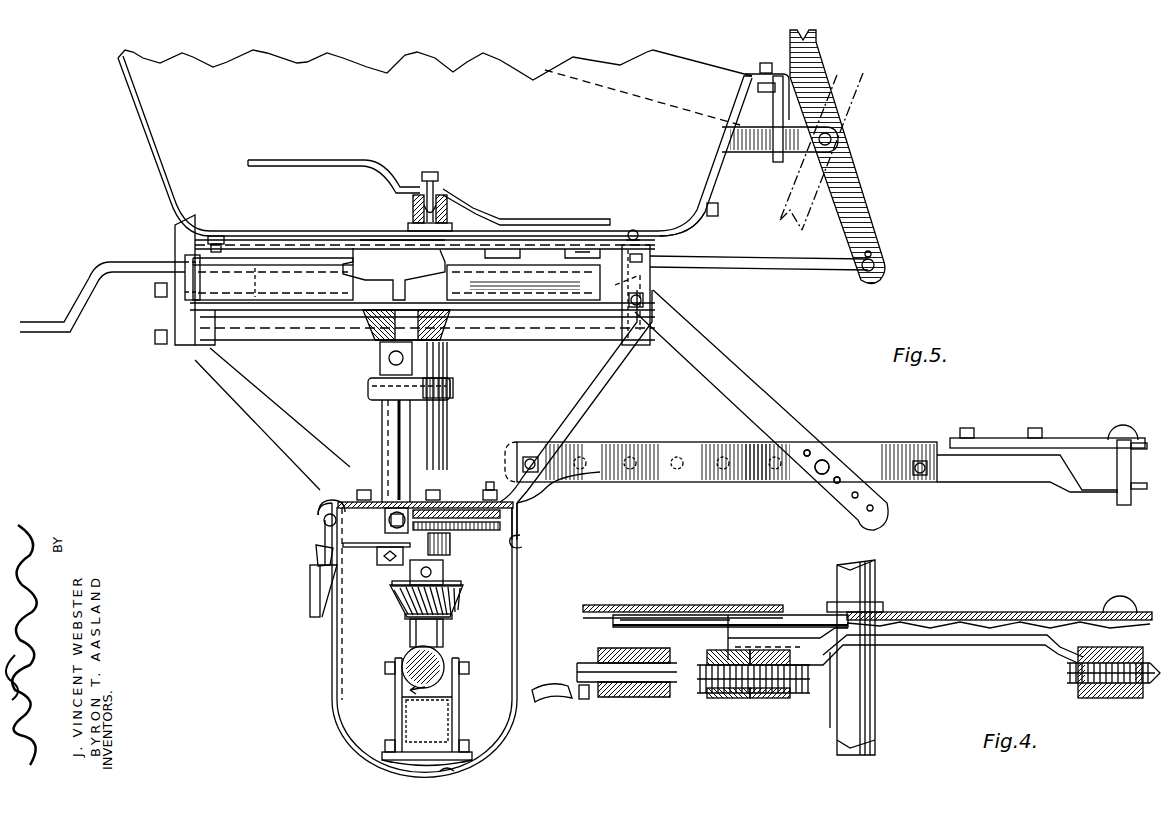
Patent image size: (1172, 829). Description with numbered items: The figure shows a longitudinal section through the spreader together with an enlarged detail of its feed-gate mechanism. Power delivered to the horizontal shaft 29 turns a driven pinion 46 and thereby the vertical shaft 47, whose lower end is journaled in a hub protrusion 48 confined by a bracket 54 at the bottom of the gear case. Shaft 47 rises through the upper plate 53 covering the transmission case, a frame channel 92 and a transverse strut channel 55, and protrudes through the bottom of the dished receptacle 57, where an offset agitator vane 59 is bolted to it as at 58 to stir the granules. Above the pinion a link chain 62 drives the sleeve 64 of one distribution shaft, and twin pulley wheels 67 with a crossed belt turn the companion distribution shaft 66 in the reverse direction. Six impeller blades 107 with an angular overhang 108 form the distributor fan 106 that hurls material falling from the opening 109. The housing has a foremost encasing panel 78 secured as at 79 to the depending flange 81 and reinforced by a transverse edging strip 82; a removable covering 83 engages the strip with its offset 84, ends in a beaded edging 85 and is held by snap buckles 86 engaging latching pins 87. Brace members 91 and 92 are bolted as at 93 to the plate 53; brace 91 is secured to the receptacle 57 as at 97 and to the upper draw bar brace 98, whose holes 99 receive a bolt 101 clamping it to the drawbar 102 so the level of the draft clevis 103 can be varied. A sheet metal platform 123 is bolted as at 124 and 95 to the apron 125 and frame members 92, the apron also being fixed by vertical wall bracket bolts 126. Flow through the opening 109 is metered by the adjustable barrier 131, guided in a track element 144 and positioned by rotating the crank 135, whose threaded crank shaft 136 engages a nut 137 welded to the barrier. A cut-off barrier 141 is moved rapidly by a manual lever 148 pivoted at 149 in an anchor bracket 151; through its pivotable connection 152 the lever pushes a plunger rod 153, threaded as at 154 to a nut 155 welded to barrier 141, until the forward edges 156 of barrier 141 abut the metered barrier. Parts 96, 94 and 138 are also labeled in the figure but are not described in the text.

In FIG. 5, the dished receptacle 57 is at (138, 108).
In FIG. 5, the offset agitator vane 59 is at (350, 160).
In FIG. 5, the bolt 58 is at (432, 177).
In FIG. 5, the vertical shaft 47 is at (440, 210).
In FIG. 4, the vertical shaft 47 is at (878, 584).
In FIG. 5, the front bracket plate 96 is at (190, 228).
In FIG. 5, the bolts 95 is at (163, 336).
In FIG. 5, the crank 135 is at (112, 258).
In FIG. 5, the track element 144 is at (290, 240).
In FIG. 4, the track element 144 is at (640, 620).
In FIG. 5, the angular overhang 108 is at (240, 264).
In FIG. 5, the impeller blades 107 is at (300, 290).
In FIG. 5, the adjustable barrier 131 is at (373, 232).
In FIG. 4, the adjustable barrier 131 is at (893, 612).
In FIG. 5, the sheet metal platform 123 is at (522, 330).
In FIG. 5, the distributor fan 106 is at (213, 312).
In FIG. 5, the forward edges 156 is at (495, 238).
In FIG. 5, the cut-off barrier 141 is at (577, 238).
In FIG. 4, the cut-off barrier 141 is at (1060, 652).
In FIG. 5, the bolts 124 is at (610, 245).
In FIG. 5, the securement 97 is at (652, 255).
In FIG. 5, the bracket nut 94 is at (647, 300).
In FIG. 5, the anchor bracket 151 is at (743, 137).
In FIG. 5, the manual lever 148 is at (807, 53).
In FIG. 5, the pivot 149 is at (831, 140).
In FIG. 5, the pivotable connection 152 is at (877, 262).
In FIG. 5, the plunger rod 153 is at (764, 270).
In FIG. 4, the plunger rod 153 is at (1145, 693).
In FIG. 5, the vertical wall bracket bolts 126 is at (716, 206).
In FIG. 5, the apron 125 is at (700, 224).
In FIG. 5, the frame channel 92 is at (268, 402).
In FIG. 5, the angle iron brace member 91 is at (572, 405).
In FIG. 5, the upper draw bar brace 98 is at (744, 378).
In FIG. 5, the drawbar 102 is at (728, 476).
In FIG. 5, the holes 99 is at (838, 478).
In FIG. 5, the bolt 101 is at (818, 470).
In FIG. 5, the draft clevis 103 is at (1115, 462).
In FIG. 5, the transverse strut channel 55 is at (452, 392).
In FIG. 5, the upper plate 53 is at (453, 500).
In FIG. 5, the companion distribution shaft 66 is at (383, 425).
In FIG. 5, the bolt 93 is at (490, 483).
In FIG. 5, the link chain 62 is at (532, 505).
In FIG. 5, the foremost encasing panel 78 is at (510, 737).
In FIG. 5, the securement 79 is at (518, 530).
In FIG. 5, the depending flange 81 is at (512, 545).
In FIG. 5, the removable covering 83 is at (330, 632).
In FIG. 5, the twin pulley wheel 67 is at (450, 548).
In FIG. 5, the sleeve 64 is at (378, 562).
In FIG. 5, the driven pinion 46 is at (460, 606).
In FIG. 5, the hub protrusion 48 is at (405, 632).
In FIG. 5, the shaft 29 is at (415, 676).
In FIG. 5, the bracket 54 is at (450, 718).
In FIG. 5, the offset 84 is at (400, 772).
In FIG. 5, the transverse edging strip 82 is at (450, 770).
In FIG. 5, the beaded edging 85 is at (322, 515).
In FIG. 5, the latching pins 87 is at (313, 545).
In FIG. 5, the snap buckles 86 is at (315, 572).
In FIG. 4, the discharge opening 109 is at (812, 605).
In FIG. 4, the nut 155 is at (1090, 655).
In FIG. 4, the threaded crank shaft 136 is at (812, 684).
In FIG. 4, the nut 137 is at (782, 698).
In FIG. 4, the spring housing 138 is at (718, 698).
In FIG. 4, the threaded portion 154 is at (1085, 688).